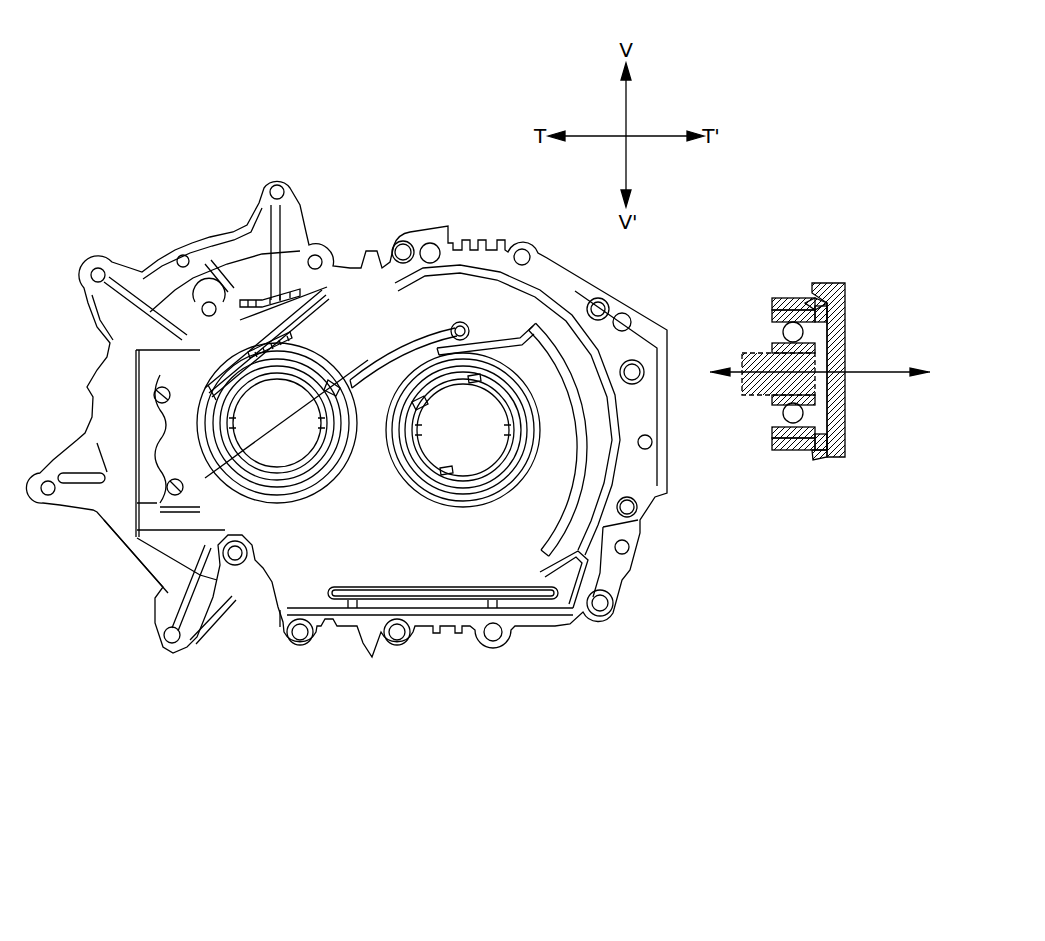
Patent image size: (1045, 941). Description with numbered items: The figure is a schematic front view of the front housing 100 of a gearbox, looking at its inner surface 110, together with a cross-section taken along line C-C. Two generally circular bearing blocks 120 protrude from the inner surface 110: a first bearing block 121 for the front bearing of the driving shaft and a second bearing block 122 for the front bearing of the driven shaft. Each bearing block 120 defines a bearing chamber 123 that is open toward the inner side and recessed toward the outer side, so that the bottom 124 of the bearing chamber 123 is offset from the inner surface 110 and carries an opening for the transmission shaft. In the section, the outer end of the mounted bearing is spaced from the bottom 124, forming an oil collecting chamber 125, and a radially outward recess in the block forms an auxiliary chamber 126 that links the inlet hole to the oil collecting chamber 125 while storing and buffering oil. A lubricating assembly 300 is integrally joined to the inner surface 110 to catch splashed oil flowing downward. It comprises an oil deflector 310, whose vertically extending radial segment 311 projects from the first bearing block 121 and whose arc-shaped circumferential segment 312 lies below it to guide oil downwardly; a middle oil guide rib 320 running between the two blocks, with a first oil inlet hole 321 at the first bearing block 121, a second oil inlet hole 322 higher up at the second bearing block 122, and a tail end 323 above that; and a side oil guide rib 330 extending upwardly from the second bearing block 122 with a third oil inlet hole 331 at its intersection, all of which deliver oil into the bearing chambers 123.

The front housing 100 is at (222, 198).
The inner surface 110 is at (530, 309).
The bearing block 120 is at (425, 488).
The first bearing block 121 is at (290, 470).
The second bearing block 122 is at (502, 482).
The bearing chamber 123 is at (410, 445).
The bottom of the bearing chamber 124 is at (295, 480).
The oil collecting chamber 125 is at (845, 322).
The auxiliary chamber 126 is at (290, 385).
The lubricating assembly 300 is at (493, 292).
The oil deflector 310 is at (310, 348).
The radial segment 311 is at (262, 309).
The circumferential segment 312 is at (283, 362).
The middle oil guide rib 320 is at (432, 352).
The first oil inlet hole 321 is at (340, 392).
The second oil inlet hole 322 is at (470, 385).
The tail end 323 is at (453, 325).
The side oil guide rib 330 is at (512, 333).
The third oil inlet hole 331 is at (495, 345).